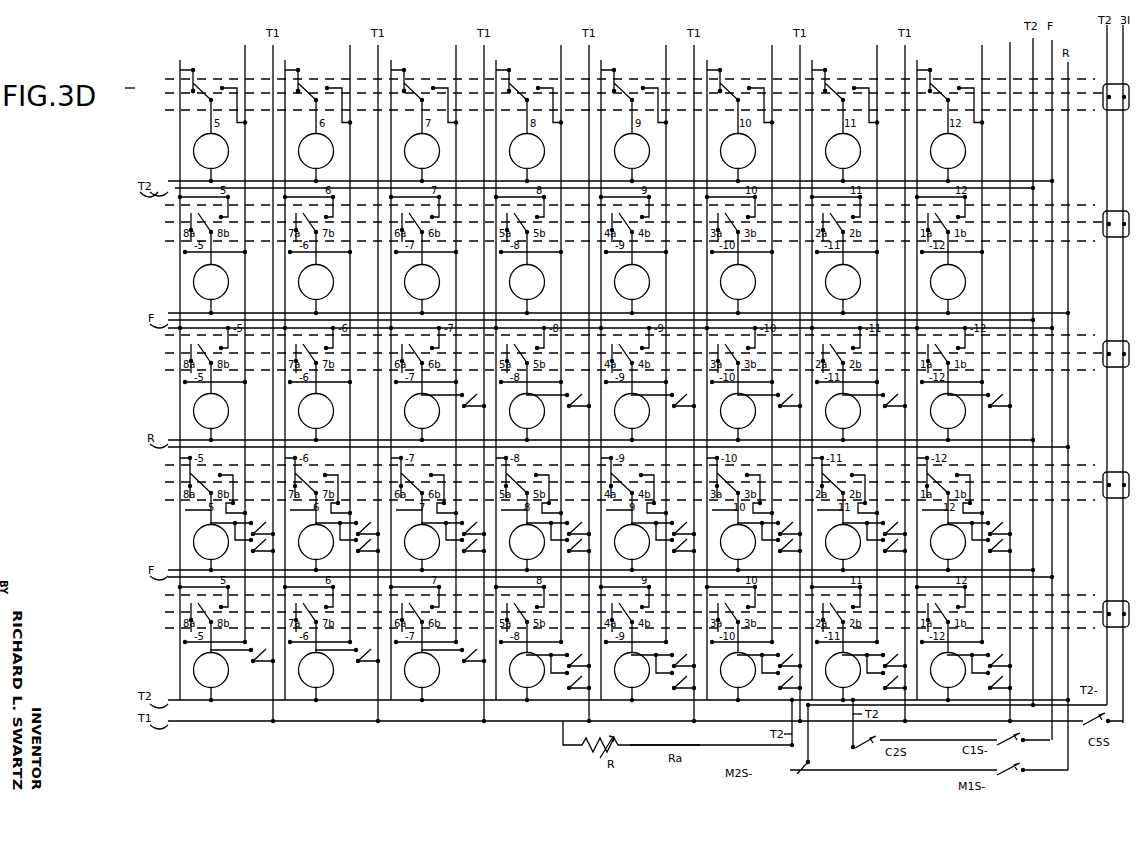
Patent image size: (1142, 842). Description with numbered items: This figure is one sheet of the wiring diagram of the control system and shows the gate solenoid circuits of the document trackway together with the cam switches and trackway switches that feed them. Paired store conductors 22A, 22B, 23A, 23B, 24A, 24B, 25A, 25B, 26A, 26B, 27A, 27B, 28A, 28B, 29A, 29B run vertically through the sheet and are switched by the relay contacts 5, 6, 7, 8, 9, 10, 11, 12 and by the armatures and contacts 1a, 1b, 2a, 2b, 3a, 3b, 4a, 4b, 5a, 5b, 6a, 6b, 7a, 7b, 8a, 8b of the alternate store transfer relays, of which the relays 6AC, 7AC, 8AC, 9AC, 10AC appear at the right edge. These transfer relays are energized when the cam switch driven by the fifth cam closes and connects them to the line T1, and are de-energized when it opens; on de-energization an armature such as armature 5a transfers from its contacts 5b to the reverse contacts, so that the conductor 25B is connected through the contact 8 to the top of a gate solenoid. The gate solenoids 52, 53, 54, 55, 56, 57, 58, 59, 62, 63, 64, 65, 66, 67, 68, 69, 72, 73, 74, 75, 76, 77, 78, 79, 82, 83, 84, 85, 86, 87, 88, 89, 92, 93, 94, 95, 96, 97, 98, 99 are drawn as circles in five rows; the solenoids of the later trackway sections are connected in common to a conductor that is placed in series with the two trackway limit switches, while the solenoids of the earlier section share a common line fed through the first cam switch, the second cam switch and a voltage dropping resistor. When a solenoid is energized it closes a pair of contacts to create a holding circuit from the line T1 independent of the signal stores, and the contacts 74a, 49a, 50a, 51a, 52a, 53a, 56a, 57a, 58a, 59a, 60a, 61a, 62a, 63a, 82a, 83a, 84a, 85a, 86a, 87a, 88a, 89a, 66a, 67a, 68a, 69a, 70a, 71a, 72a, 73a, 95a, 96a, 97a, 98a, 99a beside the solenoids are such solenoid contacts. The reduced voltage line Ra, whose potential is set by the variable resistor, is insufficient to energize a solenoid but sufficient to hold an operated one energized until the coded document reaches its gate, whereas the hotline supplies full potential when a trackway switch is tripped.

The conductor 22A is at (192, 373).
The conductor 22B is at (232, 343).
The conductor 23A is at (297, 373).
The conductor 23B is at (337, 343).
The conductor 24A is at (403, 373).
The conductor 24B is at (443, 343).
The conductor 25A is at (508, 373).
The line 25B is at (548, 343).
The conductor 26A is at (613, 373).
The conductor 26B is at (653, 343).
The conductor 27A is at (719, 373).
The conductor 27B is at (759, 343).
The conductor 28A is at (824, 373).
The conductor 28B is at (864, 343).
The conductor 29A is at (929, 373).
The conductor 29B is at (969, 343).
The relay 5 is at (213, 99).
The relay 6 is at (318, 99).
The relay 7 is at (424, 99).
The contact 8 is at (529, 99).
The relay 9 is at (634, 99).
The relay 10 is at (740, 99).
The relay 11 is at (845, 99).
The relay 12 is at (950, 99).
The relay contact 1a is at (927, 97).
The relay contact 1b is at (961, 96).
The relay contact 2a is at (822, 97).
The relay contact 2b is at (856, 96).
The relay contact 3a is at (717, 97).
The relay contact 3b is at (751, 96).
The relay contact 4a is at (611, 97).
The relay contact 4b is at (645, 96).
The armature 5a is at (506, 97).
The contacts 5b is at (540, 96).
The relay contact 6a is at (401, 97).
The relay contact 6b is at (435, 96).
The relay contact 7a is at (295, 97).
The relay contact 7b is at (329, 96).
The relay contact 8a is at (190, 97).
The relay contact 8b is at (224, 96).
The relay coil 52 is at (211, 159).
The relay coil 53 is at (316, 159).
The relay coil 54 is at (422, 159).
The relay coil 55 is at (527, 159).
The relay coil 56 is at (632, 159).
The relay coil 57 is at (738, 159).
The relay coil 58 is at (843, 159).
The relay coil 59 is at (948, 159).
The relay coil 62 is at (211, 290).
The relay coil 63 is at (316, 290).
The relay coil 64 is at (422, 290).
The relay coil 65 is at (527, 290).
The relay coil 66 is at (632, 290).
The relay coil 67 is at (738, 290).
The relay coil 68 is at (843, 290).
The relay coil 69 is at (948, 290).
The relay coil 72 is at (211, 418).
The relay coil 73 is at (316, 418).
The relay coil 74 is at (422, 418).
The relay coil 75 is at (527, 418).
The relay coil 76 is at (632, 418).
The relay coil 77 is at (738, 418).
The relay coil 78 is at (843, 418).
The relay coil 79 is at (948, 418).
The relay coil 82 is at (211, 549).
The relay coil 83 is at (316, 549).
The relay coil 84 is at (422, 549).
The relay coil 85 is at (527, 549).
The relay coil 86 is at (632, 549).
The relay coil 87 is at (738, 549).
The relay coil 88 is at (843, 549).
The relay coil 89 is at (948, 549).
The relay coil 92 is at (211, 678).
The relay coil 93 is at (316, 678).
The relay coil 94 is at (422, 678).
The relay coil 95 is at (527, 678).
The relay coil 96 is at (632, 678).
The relay coil 97 is at (738, 678).
The relay coil 98 is at (843, 678).
The relay coil 99 is at (948, 678).
The relay contact 74a is at (453, 395).
The relay contact 49a is at (558, 395).
The relay contact 50a is at (663, 395).
The relay contact 51a is at (769, 395).
The relay contact 52a is at (874, 395).
The relay contact 53a is at (979, 395).
The relay contact 56a is at (242, 523).
The relay contact 57a is at (347, 523).
The relay contact 58a is at (453, 523).
The relay contact 59a is at (558, 523).
The relay contact 60a is at (663, 523).
The relay contact 61a is at (769, 523).
The relay contact 62a is at (874, 523).
The relay contact 63a is at (979, 523).
The relay contact 82a is at (251, 542).
The relay contact 83a is at (356, 542).
The relay contact 84a is at (462, 542).
The relay contact 85a is at (567, 542).
The relay contact 86a is at (672, 542).
The relay contact 87a is at (778, 542).
The relay contact 88a is at (883, 542).
The relay contact 89a is at (988, 542).
The relay contact 66a is at (242, 650).
The relay contact 67a is at (347, 650).
The relay contact 68a is at (453, 650).
The relay contact 69a is at (558, 655).
The relay contact 70a is at (663, 655).
The relay contact 71a is at (769, 655).
The relay contact 72a is at (874, 655).
The relay contact 73a is at (979, 655).
The relay contact 95a is at (567, 674).
The relay contact 96a is at (672, 674).
The relay contact 97a is at (778, 674).
The relay contact 98a is at (883, 674).
The relay contact 99a is at (988, 674).
The alternate store transfer relay 6AC is at (1103, 89).
The alternate store transfer relay 7AC is at (1103, 216).
The alternate store transfer relay 8AC is at (1103, 346).
The alternate store transfer relay 9AC is at (1102, 475).
The alternate store transfer relay 10AC is at (1101, 605).
The line T1 is at (1007, 374).
The reduced voltage line Ra is at (708, 752).